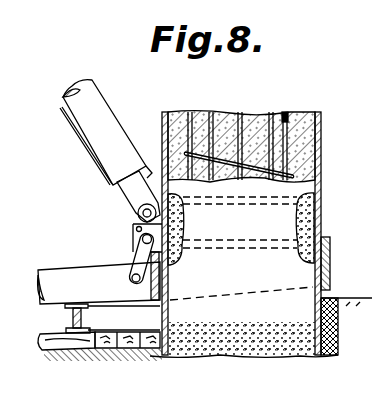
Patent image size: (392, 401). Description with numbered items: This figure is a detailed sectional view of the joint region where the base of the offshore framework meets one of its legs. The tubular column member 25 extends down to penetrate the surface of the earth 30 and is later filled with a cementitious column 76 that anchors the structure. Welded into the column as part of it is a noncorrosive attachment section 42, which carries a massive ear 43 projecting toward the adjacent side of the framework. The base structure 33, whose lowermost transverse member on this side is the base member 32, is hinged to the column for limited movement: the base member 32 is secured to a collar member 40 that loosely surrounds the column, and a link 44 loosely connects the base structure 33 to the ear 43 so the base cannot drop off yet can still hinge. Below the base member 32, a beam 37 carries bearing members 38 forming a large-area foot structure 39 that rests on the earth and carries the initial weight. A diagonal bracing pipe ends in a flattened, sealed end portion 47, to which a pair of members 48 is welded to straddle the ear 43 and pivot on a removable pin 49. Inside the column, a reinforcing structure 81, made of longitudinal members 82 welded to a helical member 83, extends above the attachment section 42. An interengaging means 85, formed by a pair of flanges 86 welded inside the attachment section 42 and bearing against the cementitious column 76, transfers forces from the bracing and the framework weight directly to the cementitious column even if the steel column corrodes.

The tubular column member 25 is at (322, 133).
The surface of the earth 30 is at (357, 298).
The base member 32 is at (64, 268).
The base structure 33 is at (36, 274).
The beam 37 is at (75, 318).
The bearing member 38 is at (42, 348).
The foot structure 39 is at (76, 355).
The collar member 40 is at (331, 264).
The attachment section 42 is at (318, 206).
The ear 43 is at (133, 243).
The link 44 is at (132, 268).
The end portion 47 is at (112, 194).
The member 48 is at (128, 214).
The removable pin 49 is at (133, 224).
The cementitious column 76 is at (300, 336).
The reinforcing structure 81 is at (285, 114).
The longitudinal member 82 is at (242, 114).
The helical member 83 is at (199, 147).
The interengaging means 85 is at (298, 217).
The flange 86 is at (318, 186).